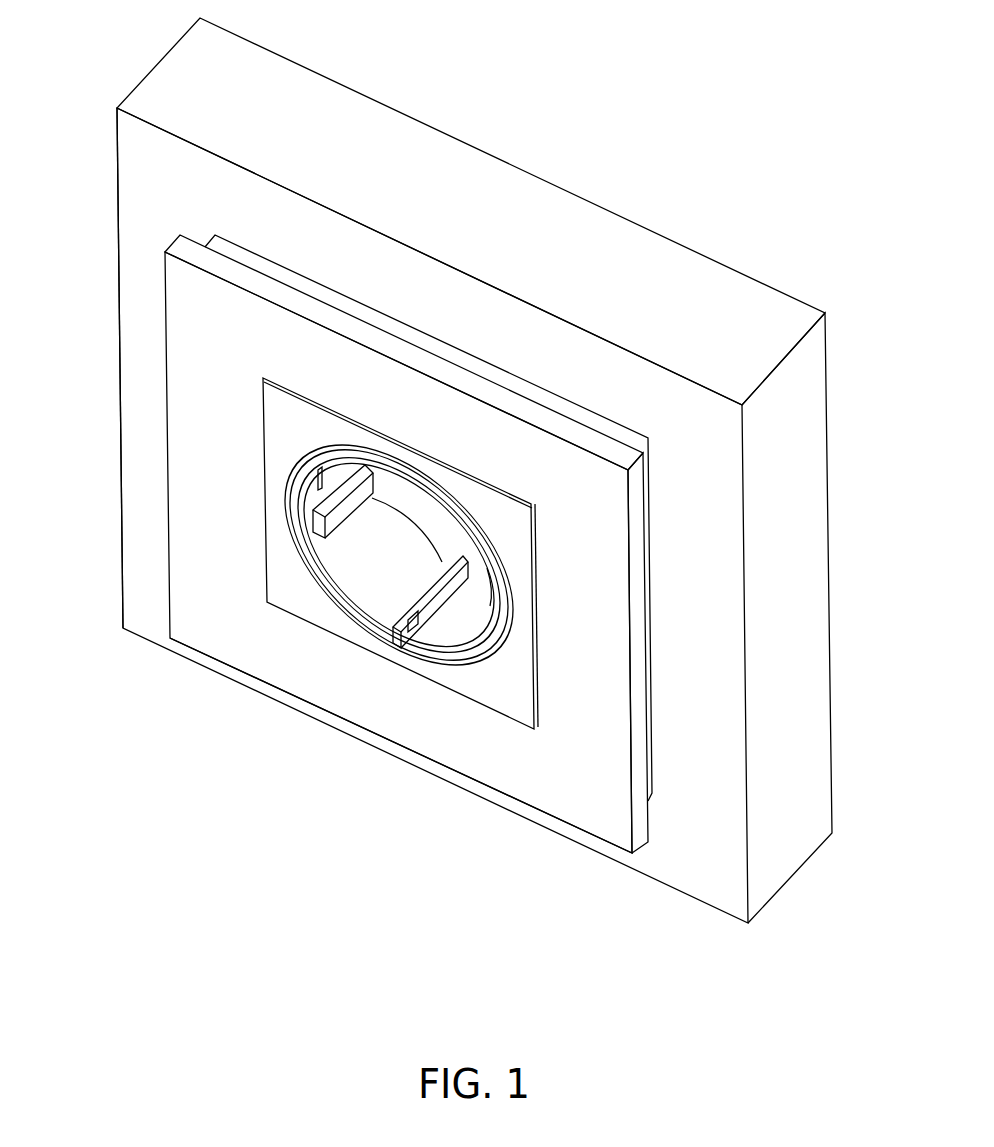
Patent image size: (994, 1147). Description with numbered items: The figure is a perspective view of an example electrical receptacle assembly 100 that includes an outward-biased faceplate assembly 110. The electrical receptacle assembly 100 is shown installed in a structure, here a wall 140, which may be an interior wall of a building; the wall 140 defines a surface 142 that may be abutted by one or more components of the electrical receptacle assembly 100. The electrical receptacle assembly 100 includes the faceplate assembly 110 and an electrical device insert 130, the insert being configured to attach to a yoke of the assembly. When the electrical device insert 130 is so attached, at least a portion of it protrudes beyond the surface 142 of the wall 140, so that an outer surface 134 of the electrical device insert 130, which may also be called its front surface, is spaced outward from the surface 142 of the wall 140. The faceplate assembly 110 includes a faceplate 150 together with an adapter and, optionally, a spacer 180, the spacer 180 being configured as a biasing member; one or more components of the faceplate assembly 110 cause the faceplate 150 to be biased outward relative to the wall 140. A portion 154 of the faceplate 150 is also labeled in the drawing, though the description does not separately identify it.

The electrical receptacle assembly 100 is at (147, 362).
The faceplate assembly 110 is at (167, 480).
The electrical device insert 130 is at (290, 583).
The outer surface 134 is at (488, 675).
The wall 140 is at (595, 248).
The surface 142 is at (708, 843).
The faceplate 150 is at (205, 608).
The lower edge portion of cover plate 154 is at (565, 765).
The spacer 180 is at (380, 322).